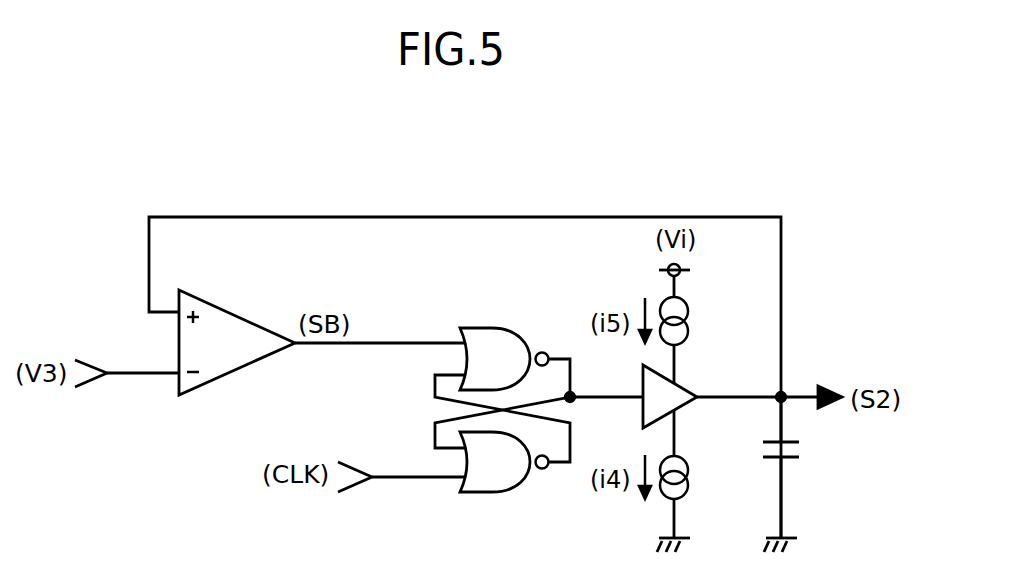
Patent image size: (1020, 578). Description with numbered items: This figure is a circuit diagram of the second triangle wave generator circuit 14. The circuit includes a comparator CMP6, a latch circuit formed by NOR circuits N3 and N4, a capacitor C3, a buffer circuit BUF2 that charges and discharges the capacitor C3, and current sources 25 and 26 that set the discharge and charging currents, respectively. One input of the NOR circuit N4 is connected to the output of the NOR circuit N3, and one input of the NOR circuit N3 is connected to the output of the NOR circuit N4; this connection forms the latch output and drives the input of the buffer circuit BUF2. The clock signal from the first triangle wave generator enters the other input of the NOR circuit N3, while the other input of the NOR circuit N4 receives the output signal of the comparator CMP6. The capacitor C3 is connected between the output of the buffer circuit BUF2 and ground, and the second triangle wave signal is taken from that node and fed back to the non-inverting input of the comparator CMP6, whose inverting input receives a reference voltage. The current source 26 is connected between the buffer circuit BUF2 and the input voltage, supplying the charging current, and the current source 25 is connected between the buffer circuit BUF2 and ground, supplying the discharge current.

The second triangle wave generator circuit 14 is at (565, 187).
The current source 25 is at (688, 492).
The current source 26 is at (689, 305).
The comparator CMP6 is at (237, 342).
The NOR circuit N3 is at (504, 481).
The NOR circuit N4 is at (504, 342).
The buffer circuit BUF2 is at (700, 394).
The capacitor C3 is at (762, 467).